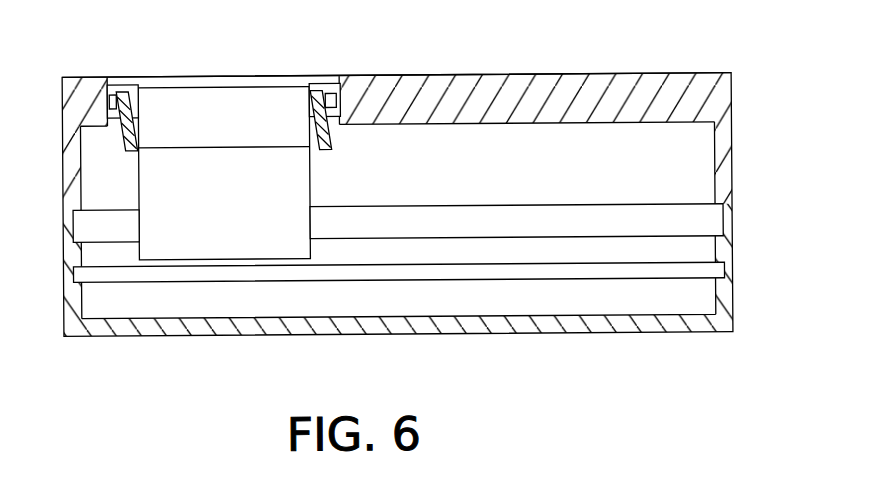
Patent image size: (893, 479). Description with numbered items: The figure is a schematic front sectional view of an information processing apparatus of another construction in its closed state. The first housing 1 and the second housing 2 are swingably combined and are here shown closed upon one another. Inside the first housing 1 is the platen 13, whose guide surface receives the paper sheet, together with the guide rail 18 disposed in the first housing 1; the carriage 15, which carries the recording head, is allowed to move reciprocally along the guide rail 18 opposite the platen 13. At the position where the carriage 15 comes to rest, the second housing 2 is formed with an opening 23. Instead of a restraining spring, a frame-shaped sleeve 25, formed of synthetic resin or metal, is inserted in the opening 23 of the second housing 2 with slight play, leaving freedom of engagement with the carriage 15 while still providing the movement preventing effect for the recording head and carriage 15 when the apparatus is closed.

The first housing 1 is at (595, 325).
The second housing 2 is at (418, 94).
The platen 13 is at (418, 273).
The carriage 15 is at (242, 225).
The guide rail 18 is at (565, 225).
The opening 23 is at (321, 92).
The frame-shaped sleeve 25 is at (122, 106).